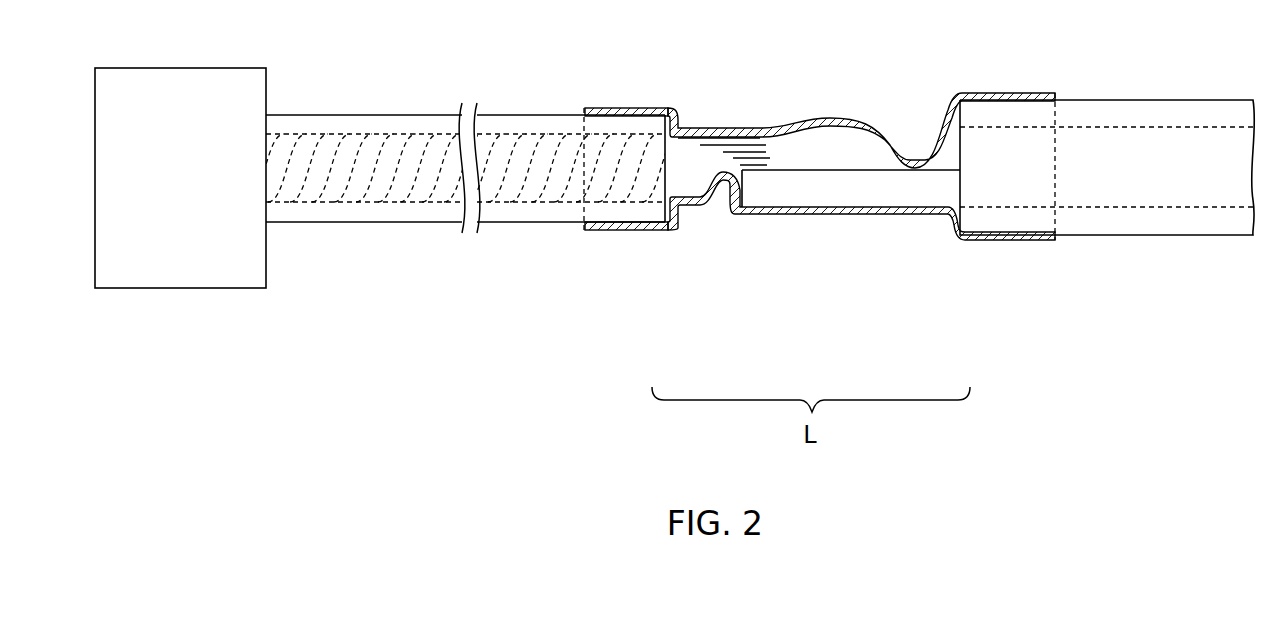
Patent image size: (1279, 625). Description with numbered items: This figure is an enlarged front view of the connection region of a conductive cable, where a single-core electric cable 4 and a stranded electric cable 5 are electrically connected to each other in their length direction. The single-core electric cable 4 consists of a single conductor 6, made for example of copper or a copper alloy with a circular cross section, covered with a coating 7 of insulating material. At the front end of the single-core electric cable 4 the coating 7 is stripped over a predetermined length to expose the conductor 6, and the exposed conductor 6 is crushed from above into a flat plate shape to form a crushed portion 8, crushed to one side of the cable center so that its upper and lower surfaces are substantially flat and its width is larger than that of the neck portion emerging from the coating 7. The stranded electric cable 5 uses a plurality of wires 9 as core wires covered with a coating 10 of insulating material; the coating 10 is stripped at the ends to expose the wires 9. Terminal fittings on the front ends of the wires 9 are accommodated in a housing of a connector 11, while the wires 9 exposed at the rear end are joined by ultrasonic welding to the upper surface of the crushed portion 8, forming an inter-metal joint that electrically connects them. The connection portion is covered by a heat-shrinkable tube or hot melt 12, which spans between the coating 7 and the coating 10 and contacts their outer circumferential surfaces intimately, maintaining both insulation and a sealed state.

The single-core electric cable 4 is at (1110, 236).
The stranded electric cable 5 is at (547, 223).
The conductor 6 is at (1090, 145).
The coating 7 is at (1175, 112).
The crushed portion 8 is at (850, 190).
The wires 9 is at (746, 150).
The coating 10 is at (534, 115).
The connector 11 is at (143, 83).
The heat-shrinkable tube or hot melt 12 is at (833, 120).